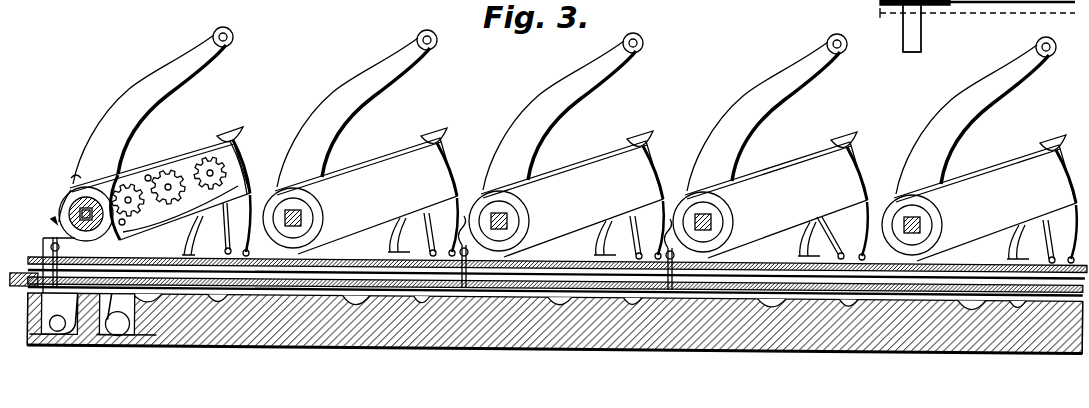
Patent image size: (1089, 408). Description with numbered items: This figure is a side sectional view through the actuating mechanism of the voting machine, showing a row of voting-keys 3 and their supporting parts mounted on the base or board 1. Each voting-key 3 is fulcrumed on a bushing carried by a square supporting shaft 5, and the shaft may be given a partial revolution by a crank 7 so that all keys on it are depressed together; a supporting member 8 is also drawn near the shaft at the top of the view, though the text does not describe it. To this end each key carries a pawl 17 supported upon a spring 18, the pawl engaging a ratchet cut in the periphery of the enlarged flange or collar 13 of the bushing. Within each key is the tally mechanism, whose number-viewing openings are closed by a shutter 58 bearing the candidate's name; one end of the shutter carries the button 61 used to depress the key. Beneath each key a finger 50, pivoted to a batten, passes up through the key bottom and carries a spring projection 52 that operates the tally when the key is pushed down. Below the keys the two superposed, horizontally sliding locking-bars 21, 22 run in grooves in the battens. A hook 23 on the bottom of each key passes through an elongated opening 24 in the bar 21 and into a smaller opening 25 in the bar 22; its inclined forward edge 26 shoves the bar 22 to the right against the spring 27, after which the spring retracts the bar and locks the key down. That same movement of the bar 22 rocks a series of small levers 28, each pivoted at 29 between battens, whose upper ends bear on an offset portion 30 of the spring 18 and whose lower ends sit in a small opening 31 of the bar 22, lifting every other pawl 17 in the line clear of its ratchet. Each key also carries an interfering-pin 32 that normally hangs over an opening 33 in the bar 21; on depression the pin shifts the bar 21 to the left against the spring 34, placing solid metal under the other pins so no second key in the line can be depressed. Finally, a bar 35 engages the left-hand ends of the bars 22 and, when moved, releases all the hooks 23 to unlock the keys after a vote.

The base or board 1 is at (781, 337).
The voting-key 3 is at (396, 161).
The supporting shaft 5 is at (304, 221).
The crank 7 is at (209, 64).
The supporting bar 8 is at (991, 9).
The flange or collar 13 is at (880, 13).
The pawl 17 is at (60, 218).
The spring 18 is at (77, 188).
The locking-bar 21 is at (973, 270).
The locking-bar 22 is at (796, 240).
The hook 23 is at (524, 237).
The elongated opening 24 is at (595, 240).
The opening 25 is at (364, 280).
The inclined forward edge 26 is at (206, 231).
The spring 27 is at (120, 328).
The lever 28 is at (43, 238).
The pivot 29 is at (51, 249).
The offset portion 30 is at (52, 219).
The opening 31 is at (264, 272).
The interfering-pin 32 is at (1054, 241).
The opening 33 is at (557, 276).
The spring 34 is at (48, 301).
The bar 35 is at (19, 270).
The finger 50 is at (256, 194).
The spring projection 52 is at (254, 172).
The shutter 58 is at (163, 167).
The button 61 is at (241, 128).